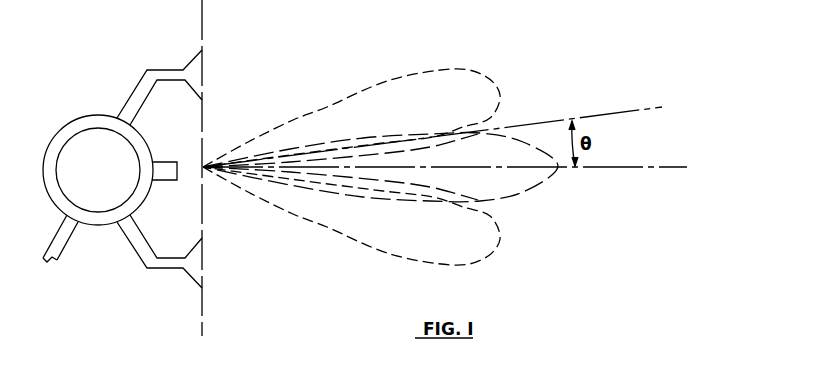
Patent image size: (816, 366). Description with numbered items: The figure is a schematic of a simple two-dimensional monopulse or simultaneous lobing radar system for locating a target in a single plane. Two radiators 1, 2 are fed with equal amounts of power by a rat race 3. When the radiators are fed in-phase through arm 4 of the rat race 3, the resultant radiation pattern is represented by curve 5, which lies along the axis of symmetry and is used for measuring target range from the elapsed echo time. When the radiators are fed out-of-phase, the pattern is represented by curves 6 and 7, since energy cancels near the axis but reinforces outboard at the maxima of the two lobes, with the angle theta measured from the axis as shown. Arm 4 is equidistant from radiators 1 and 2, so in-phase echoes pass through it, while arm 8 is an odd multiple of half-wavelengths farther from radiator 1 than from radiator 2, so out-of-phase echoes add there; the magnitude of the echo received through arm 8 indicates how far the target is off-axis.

The radiator 1 is at (199, 62).
The radiator 2 is at (196, 271).
The rat race 3 is at (80, 121).
The arm 4 is at (156, 165).
The curve 5 is at (512, 190).
The curve 6 is at (492, 250).
The curve 7 is at (498, 96).
The arm 8 is at (58, 238).